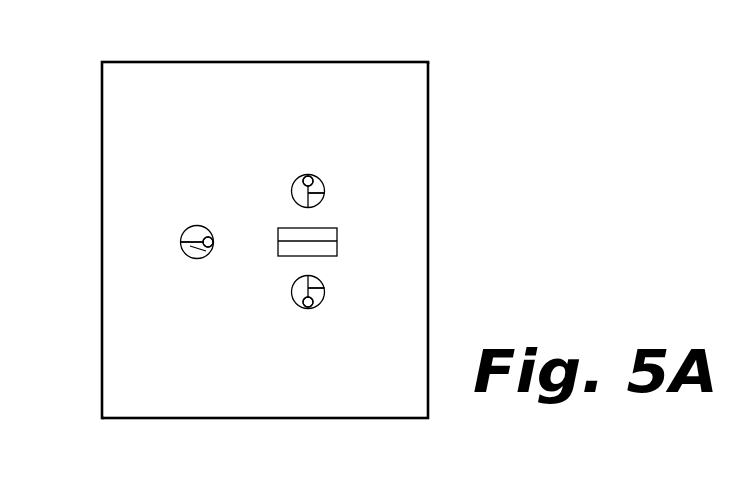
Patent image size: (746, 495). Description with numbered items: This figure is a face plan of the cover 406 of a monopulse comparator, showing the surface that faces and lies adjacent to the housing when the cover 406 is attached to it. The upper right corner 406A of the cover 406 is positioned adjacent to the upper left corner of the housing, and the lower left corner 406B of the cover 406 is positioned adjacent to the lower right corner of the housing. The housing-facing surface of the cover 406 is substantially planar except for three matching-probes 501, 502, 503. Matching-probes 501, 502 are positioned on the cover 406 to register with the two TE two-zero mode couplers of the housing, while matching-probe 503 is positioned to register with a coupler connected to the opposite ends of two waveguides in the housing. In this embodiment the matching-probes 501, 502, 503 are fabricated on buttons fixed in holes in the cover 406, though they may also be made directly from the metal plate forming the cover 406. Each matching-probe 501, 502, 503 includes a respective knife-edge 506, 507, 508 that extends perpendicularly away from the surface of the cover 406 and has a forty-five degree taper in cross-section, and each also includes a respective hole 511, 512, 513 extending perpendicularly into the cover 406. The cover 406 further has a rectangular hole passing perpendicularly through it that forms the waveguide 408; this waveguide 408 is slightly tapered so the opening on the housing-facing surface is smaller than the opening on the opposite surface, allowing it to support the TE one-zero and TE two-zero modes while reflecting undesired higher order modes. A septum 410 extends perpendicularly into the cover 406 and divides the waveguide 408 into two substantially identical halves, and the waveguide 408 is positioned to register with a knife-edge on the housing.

The cover 406 is at (183, 77).
The upper right corner of cover 406A is at (428, 62).
The lower left corner of cover 406B is at (102, 418).
The matching-probe 501 is at (326, 160).
The matching-probe 502 is at (298, 304).
The matching-probe 503 is at (197, 226).
The knife-edge 506 is at (324, 200).
The knife-edge 507 is at (323, 287).
The knife-edge 508 is at (189, 254).
The hole 511 is at (298, 179).
The hole 512 is at (313, 307).
The hole 513 is at (209, 257).
The septum 410 is at (279, 240).
The waveguide 408 is at (347, 236).